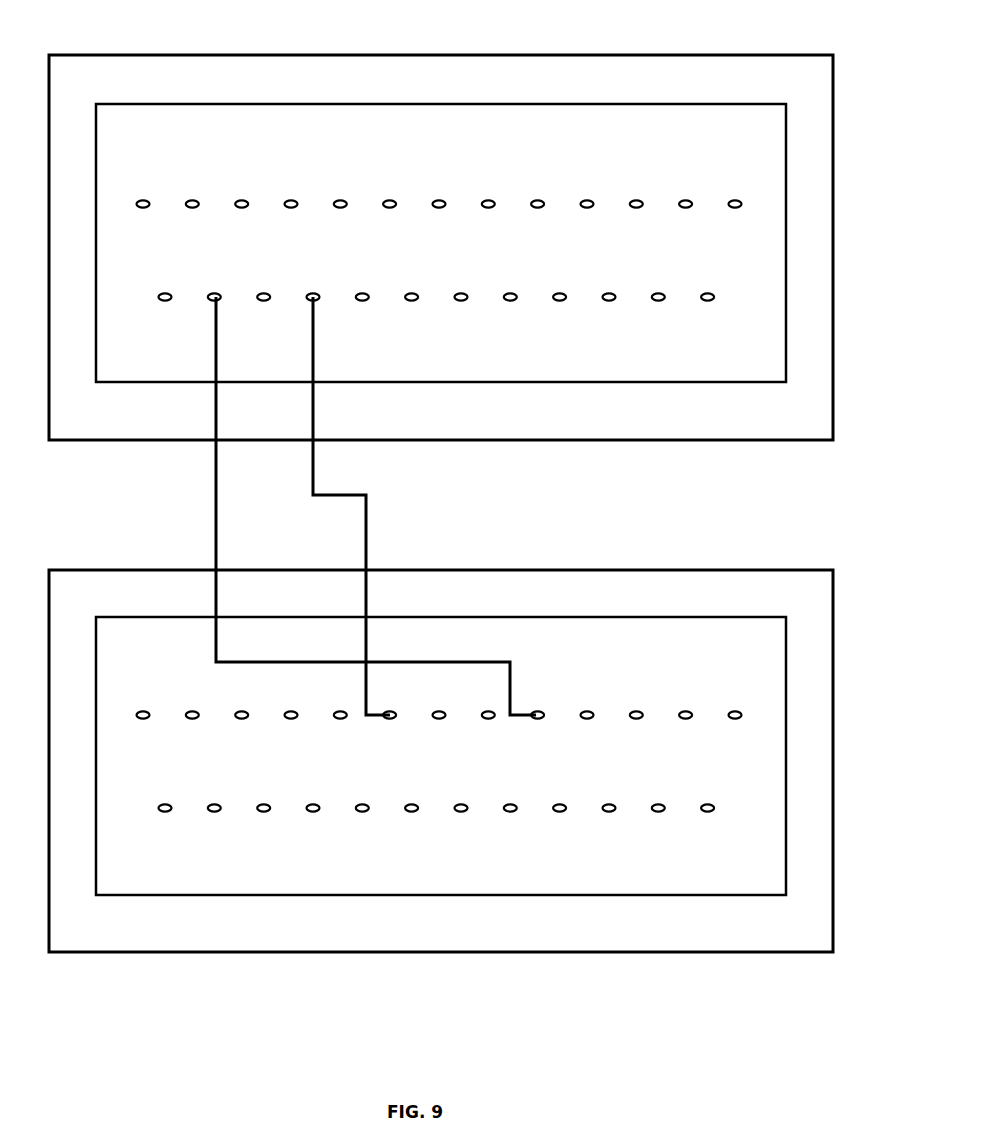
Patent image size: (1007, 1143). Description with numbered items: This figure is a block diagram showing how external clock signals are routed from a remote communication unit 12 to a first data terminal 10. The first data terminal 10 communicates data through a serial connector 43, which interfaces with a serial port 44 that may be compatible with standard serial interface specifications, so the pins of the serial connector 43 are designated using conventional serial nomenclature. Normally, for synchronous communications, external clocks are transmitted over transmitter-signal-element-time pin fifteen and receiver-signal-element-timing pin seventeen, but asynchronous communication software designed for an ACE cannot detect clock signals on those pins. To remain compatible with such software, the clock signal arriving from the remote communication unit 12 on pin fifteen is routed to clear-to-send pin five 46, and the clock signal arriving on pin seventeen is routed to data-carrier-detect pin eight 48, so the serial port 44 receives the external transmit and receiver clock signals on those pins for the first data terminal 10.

The remote communication unit 12 is at (440, 55).
The first data terminal 10 is at (834, 760).
The serial port 44 is at (787, 685).
The serial connector 43 is at (416, 533).
The data-carrier-detect pin eight 48 is at (398, 715).
The clear-to-send pin five 46 is at (545, 715).